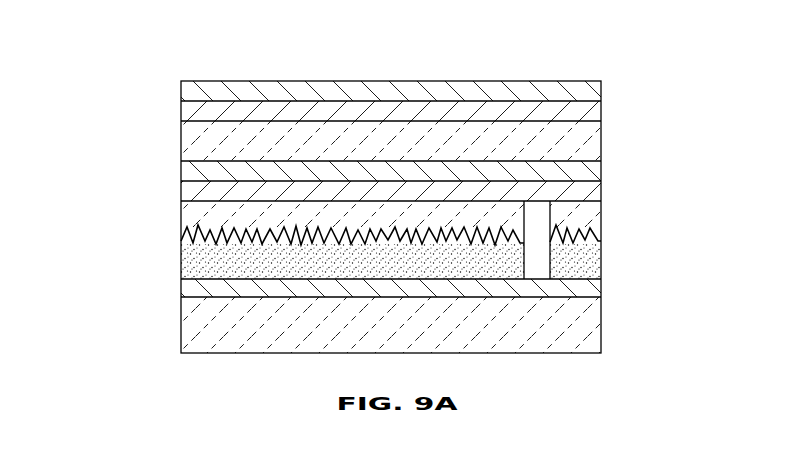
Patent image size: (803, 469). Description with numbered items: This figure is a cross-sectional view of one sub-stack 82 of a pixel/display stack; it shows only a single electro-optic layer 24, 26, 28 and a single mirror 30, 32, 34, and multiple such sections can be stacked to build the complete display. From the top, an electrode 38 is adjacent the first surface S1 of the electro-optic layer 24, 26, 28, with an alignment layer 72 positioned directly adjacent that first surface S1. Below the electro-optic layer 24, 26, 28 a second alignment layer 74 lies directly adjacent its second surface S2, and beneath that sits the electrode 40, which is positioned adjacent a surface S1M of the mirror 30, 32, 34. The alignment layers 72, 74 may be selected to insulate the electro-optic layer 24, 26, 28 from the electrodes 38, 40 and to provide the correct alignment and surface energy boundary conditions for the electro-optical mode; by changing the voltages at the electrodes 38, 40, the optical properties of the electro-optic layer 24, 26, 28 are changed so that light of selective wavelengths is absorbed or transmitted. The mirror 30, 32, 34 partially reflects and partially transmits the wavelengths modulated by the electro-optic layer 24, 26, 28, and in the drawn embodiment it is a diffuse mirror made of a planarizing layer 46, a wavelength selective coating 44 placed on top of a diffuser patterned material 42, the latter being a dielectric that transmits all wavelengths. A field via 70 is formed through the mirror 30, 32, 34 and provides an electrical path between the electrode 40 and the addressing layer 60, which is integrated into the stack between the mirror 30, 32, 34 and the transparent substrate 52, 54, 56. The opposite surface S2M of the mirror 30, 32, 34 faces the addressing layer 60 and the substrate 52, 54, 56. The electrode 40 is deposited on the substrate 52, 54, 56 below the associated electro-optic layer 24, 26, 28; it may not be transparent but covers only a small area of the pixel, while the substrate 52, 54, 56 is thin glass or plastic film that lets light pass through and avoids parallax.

The sub-stack 82 is at (379, 176).
The electrode 38 is at (586, 96).
The first surface S1 is at (571, 117).
The alignment layer 72 is at (198, 113).
The electro-optic layer 24 is at (455, 141).
The electro-optic layer 26 is at (455, 141).
The electro-optic layer 28 is at (590, 138).
The second surface S2 is at (247, 161).
The alignment layer 74 is at (200, 161).
The electrode 40 is at (590, 192).
The surface of mirror S1M is at (228, 200).
The mirror 30 is at (349, 161).
The mirror 32 is at (349, 161).
The mirror 34 is at (349, 161).
The planarizing layer 46 is at (592, 218).
The field via 70 is at (562, 247).
The diffuser patterned material 42 is at (538, 252).
The wavelength selective coating 44 is at (470, 222).
The addressing layer 60 is at (590, 290).
The surface of mirror S2M is at (215, 296).
The transparent substrate 52 is at (455, 325).
The transparent substrate 54 is at (455, 325).
The transparent substrate 56 is at (585, 331).